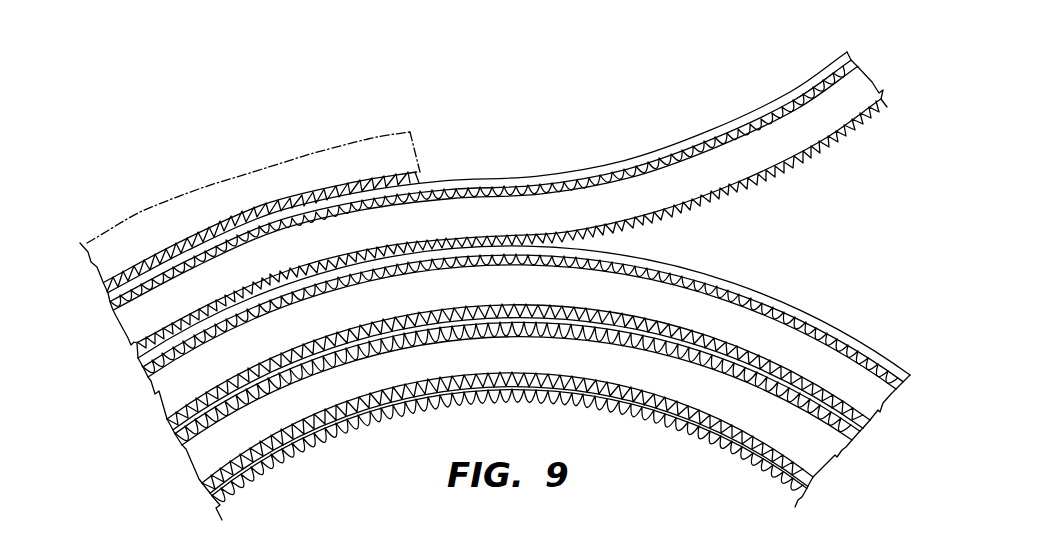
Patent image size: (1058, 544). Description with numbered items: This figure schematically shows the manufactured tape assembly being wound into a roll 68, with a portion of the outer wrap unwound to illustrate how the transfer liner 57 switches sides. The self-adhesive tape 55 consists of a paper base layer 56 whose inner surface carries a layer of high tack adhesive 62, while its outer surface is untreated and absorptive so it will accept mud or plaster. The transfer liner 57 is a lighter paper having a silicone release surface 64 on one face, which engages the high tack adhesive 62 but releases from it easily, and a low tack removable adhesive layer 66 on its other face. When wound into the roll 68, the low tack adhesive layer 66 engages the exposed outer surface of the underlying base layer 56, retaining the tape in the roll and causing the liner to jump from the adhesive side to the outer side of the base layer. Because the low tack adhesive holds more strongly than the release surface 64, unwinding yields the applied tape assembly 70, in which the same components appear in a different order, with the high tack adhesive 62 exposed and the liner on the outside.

The self-adhesive tape 55 is at (312, 150).
The paper base layer 56 is at (874, 88).
The transfer liner 57 is at (770, 106).
The high tack adhesive layer 62 is at (853, 140).
The release surface 64 is at (678, 147).
The low tack removable adhesive layer 66 is at (859, 65).
The roll 68 is at (847, 300).
The applied tape assembly 70 is at (593, 170).